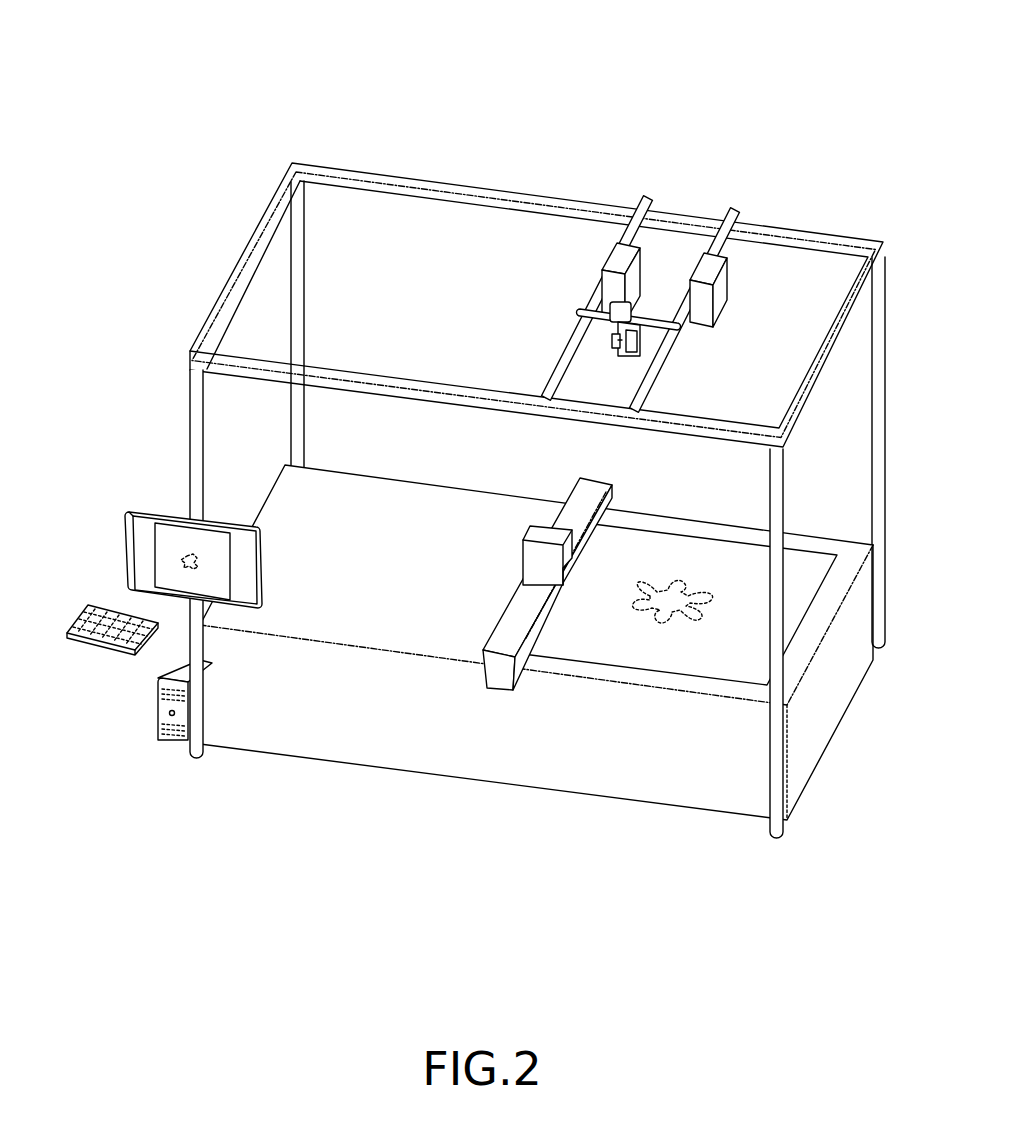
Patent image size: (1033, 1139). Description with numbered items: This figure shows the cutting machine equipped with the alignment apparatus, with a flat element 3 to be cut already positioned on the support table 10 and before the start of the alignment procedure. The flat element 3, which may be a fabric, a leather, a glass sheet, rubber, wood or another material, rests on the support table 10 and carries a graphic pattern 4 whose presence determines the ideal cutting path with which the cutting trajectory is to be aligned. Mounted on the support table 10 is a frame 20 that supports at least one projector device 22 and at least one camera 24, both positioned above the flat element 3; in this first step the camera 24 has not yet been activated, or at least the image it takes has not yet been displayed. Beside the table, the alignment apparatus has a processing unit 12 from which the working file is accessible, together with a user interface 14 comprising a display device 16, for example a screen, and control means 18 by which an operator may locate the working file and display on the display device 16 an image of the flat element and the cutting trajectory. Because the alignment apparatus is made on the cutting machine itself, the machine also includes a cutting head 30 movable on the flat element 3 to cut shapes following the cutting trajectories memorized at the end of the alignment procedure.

The frame 20 is at (808, 214).
The projector device 22 is at (628, 272).
The camera 24 is at (612, 340).
The support table 10 is at (373, 608).
The flat element 3 is at (738, 655).
The graphic pattern 4 is at (656, 621).
The cutting head 30 is at (550, 562).
The processing unit 12 is at (176, 740).
The user interface 14 is at (123, 537).
The display device 16 is at (177, 517).
The control means 18 is at (108, 633).